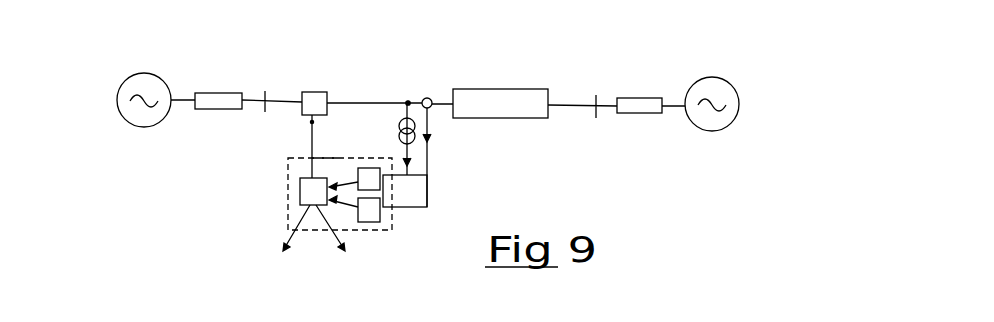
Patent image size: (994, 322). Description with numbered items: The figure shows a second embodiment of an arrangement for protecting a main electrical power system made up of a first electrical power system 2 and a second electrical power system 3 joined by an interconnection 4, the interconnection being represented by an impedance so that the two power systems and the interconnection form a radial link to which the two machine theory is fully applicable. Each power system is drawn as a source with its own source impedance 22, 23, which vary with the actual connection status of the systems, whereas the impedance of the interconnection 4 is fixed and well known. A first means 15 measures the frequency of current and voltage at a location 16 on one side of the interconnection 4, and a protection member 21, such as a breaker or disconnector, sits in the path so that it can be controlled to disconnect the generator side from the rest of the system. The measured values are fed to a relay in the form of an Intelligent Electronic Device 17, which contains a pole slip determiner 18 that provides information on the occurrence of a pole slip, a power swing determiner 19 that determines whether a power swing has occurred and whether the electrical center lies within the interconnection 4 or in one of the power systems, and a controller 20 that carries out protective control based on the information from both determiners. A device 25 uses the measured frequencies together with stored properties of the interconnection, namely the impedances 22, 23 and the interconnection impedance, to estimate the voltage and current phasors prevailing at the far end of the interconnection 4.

The first electrical power system 2 is at (143, 127).
The second electrical power system 3 is at (739, 108).
The interconnection 4 is at (507, 89).
The first means 15 is at (418, 110).
The location 16 is at (412, 102).
The intelligent electronic device 17 is at (289, 190).
The pole slip determiner 18 is at (383, 185).
The power swing determiner 19 is at (380, 222).
The controller 20 is at (296, 205).
The protection member 21 is at (315, 92).
The impedance 22 is at (215, 92).
The impedance 23 is at (635, 100).
The device 25 is at (335, 170).